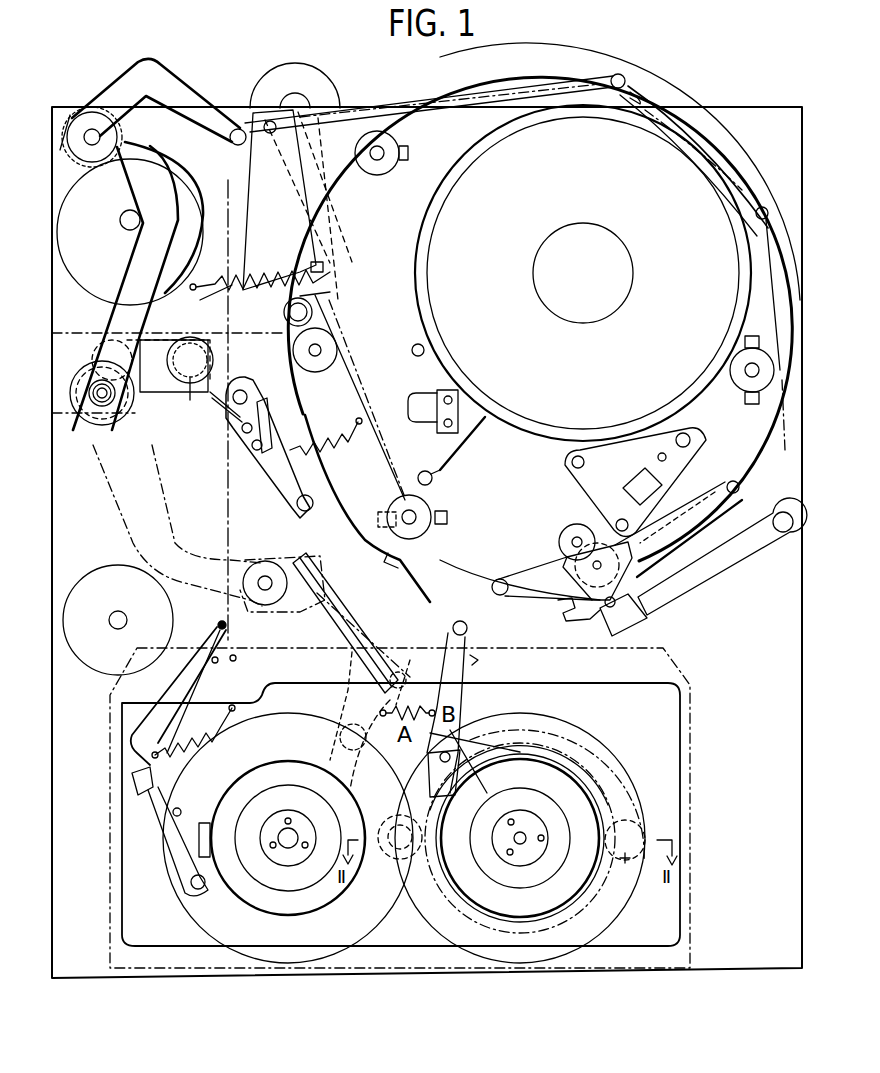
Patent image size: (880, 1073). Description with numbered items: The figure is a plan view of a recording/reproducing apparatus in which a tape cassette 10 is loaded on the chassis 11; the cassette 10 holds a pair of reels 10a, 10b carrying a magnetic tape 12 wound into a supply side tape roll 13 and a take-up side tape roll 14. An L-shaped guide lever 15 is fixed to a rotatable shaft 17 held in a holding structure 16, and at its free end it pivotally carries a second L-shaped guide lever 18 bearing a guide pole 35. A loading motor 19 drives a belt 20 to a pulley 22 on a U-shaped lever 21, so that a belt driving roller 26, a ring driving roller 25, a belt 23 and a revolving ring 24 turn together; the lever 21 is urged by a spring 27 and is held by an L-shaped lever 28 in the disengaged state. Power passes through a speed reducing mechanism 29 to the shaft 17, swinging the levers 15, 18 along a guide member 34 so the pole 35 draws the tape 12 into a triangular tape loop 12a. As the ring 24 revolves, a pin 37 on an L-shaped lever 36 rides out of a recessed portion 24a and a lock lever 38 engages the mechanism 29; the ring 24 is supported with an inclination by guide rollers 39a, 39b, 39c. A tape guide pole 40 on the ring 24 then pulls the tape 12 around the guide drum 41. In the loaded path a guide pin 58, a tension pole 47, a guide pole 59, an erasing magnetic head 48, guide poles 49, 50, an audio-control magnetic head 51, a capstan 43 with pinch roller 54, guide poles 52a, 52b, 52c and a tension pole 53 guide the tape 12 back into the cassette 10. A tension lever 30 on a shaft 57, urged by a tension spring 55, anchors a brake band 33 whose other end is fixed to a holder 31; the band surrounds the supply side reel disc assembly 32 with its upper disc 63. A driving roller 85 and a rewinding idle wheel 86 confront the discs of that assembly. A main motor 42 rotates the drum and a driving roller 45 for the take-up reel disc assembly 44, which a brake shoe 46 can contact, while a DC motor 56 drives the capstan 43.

The tape cassette 10 is at (110, 768).
The reel 10a is at (550, 965).
The reel 10b is at (268, 965).
The chassis 11 is at (332, 977).
The magnetic tape 12 is at (600, 80).
The tape loop 12a is at (380, 447).
The supply side tape roll 13 is at (596, 780).
The take-up side tape roll 14 is at (190, 918).
The L-shaped guide lever 15 is at (128, 264).
The holding structure 16 is at (68, 420).
The rotatable shaft 17 is at (108, 410).
The L-shaped guide lever 18 is at (188, 92).
The motor 19 is at (322, 84).
The belt 20 is at (326, 200).
The U-shaped lever 21 is at (310, 242).
The pulley 22 is at (326, 268).
The belt 23 is at (322, 372).
The revolving ring 24 is at (684, 97).
The recessed portion 24a is at (410, 567).
The ring driving roller 25 is at (313, 312).
The belt driving roller 26 is at (332, 291).
The spring 27 is at (205, 300).
The L-shaped lever 28 is at (226, 281).
The speed reducing mechanism 29 is at (176, 415).
The tension lever 30 is at (464, 700).
The holder 31 is at (445, 800).
The supply side reel disc assembly 32 is at (606, 879).
The brake band 33 is at (488, 740).
The guide member 34 is at (345, 625).
The guide pole 35 is at (232, 142).
The L-shaped lever 36 is at (272, 480).
The pin 37 is at (300, 510).
The lock lever 38 is at (207, 407).
The guide roller 39a is at (400, 148).
The guide roller 39b is at (732, 366).
The guide roller 39c is at (432, 508).
The tape guide pole 40 is at (498, 578).
The guide drum 41 is at (440, 215).
The main motor 42 is at (98, 278).
The capstan 43 is at (566, 535).
The take-up reel disc assembly 44 is at (283, 925).
The driving roller 45 is at (370, 815).
The brake shoe 46 is at (212, 822).
The tension pole 47 is at (468, 630).
The erasing magnetic head 48 is at (420, 410).
The guide pole 49 is at (411, 347).
The guide pole 50 is at (692, 440).
The audio-control magnetic head 51 is at (662, 497).
The guide pole 52a is at (722, 544).
The guide pole 52b is at (770, 208).
The guide pole 52c is at (625, 72).
The tension pole 53 is at (216, 622).
The pinch roller 54 is at (596, 540).
The tension spring 55 is at (418, 700).
The DC motor 56 is at (96, 665).
The shaft 57 is at (460, 748).
The guide pin 58 is at (482, 661).
The guide pole 59 is at (455, 468).
The upper disc 63 is at (555, 808).
The driving roller 85 is at (392, 862).
The rewinding idle wheel 86 is at (622, 858).